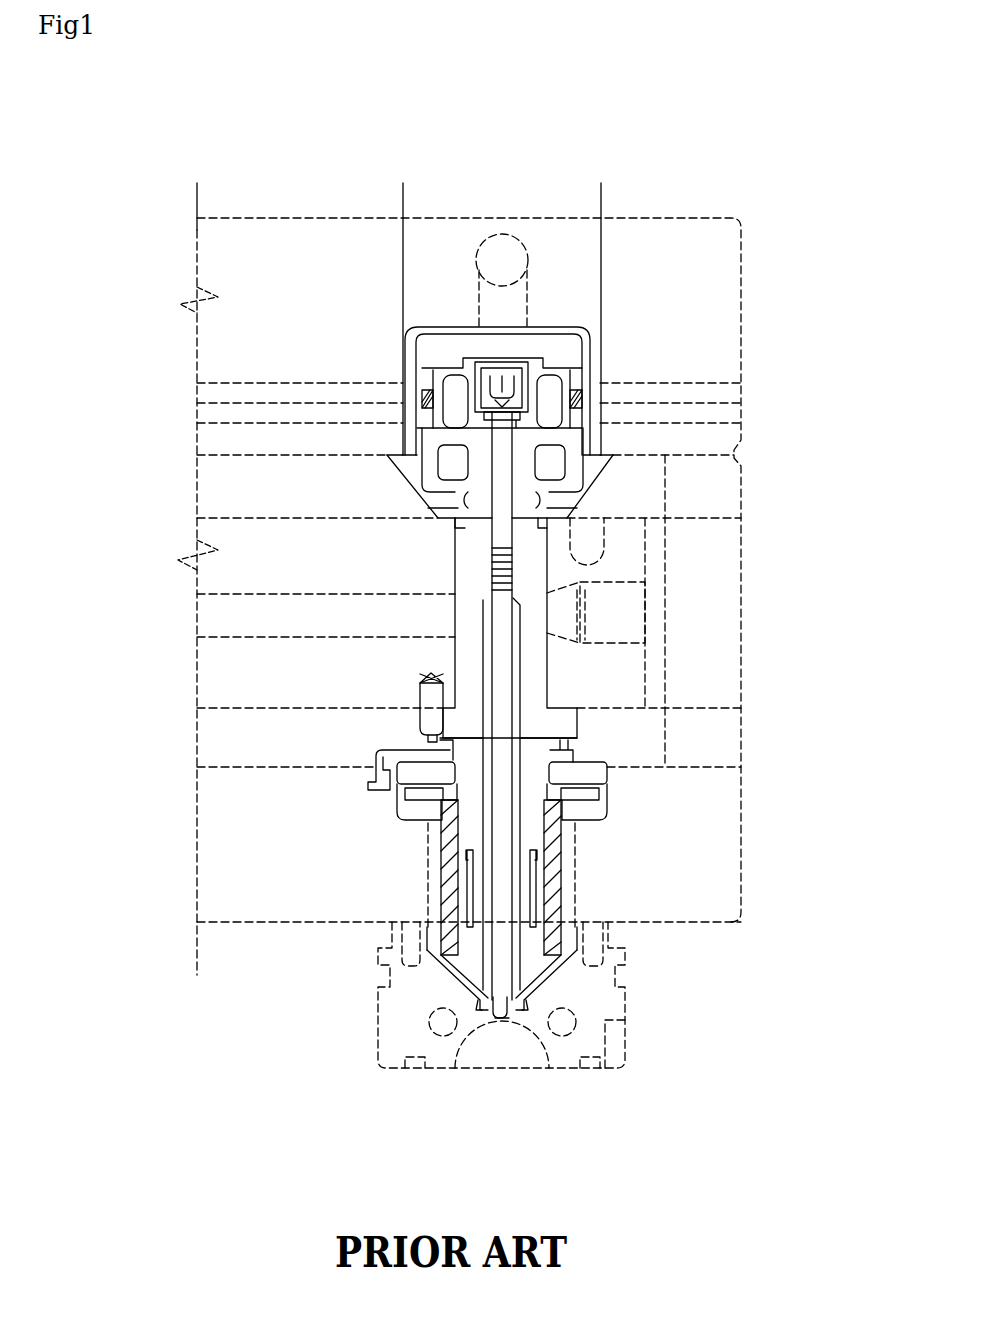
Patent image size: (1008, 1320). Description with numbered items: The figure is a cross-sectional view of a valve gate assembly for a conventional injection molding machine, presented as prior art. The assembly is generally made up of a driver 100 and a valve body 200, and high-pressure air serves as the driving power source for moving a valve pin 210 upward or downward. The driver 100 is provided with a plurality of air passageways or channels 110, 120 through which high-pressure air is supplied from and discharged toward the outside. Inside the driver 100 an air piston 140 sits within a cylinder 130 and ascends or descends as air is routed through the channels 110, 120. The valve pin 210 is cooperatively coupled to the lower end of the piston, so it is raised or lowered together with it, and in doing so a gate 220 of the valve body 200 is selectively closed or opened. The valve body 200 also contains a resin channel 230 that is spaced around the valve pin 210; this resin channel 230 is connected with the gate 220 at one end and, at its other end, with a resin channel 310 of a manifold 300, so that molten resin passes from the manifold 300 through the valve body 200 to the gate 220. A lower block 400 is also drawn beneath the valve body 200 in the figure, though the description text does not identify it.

The driver 100 is at (400, 347).
The air passageway 110 is at (507, 262).
The air passageway 120 is at (212, 416).
The cylinder 130 is at (590, 420).
The air piston 140 is at (578, 360).
The valve body 200 is at (440, 903).
The valve pin 210 is at (500, 930).
The gate 220 is at (503, 1020).
The resin channel 230 is at (488, 867).
The manifold 300 is at (212, 542).
The resin channel 310 is at (222, 620).
The lower mounting block 400 is at (378, 1020).